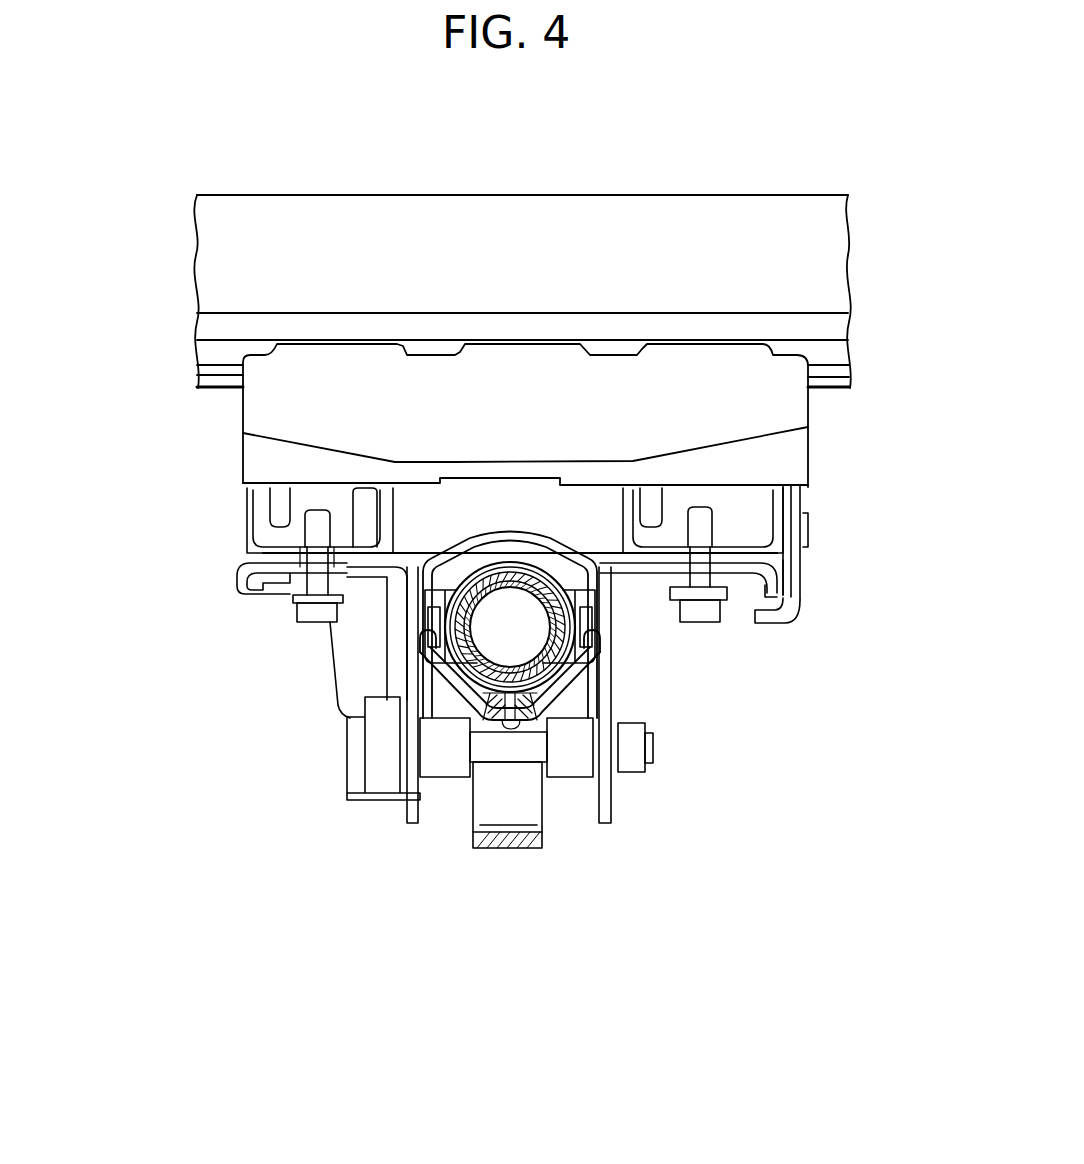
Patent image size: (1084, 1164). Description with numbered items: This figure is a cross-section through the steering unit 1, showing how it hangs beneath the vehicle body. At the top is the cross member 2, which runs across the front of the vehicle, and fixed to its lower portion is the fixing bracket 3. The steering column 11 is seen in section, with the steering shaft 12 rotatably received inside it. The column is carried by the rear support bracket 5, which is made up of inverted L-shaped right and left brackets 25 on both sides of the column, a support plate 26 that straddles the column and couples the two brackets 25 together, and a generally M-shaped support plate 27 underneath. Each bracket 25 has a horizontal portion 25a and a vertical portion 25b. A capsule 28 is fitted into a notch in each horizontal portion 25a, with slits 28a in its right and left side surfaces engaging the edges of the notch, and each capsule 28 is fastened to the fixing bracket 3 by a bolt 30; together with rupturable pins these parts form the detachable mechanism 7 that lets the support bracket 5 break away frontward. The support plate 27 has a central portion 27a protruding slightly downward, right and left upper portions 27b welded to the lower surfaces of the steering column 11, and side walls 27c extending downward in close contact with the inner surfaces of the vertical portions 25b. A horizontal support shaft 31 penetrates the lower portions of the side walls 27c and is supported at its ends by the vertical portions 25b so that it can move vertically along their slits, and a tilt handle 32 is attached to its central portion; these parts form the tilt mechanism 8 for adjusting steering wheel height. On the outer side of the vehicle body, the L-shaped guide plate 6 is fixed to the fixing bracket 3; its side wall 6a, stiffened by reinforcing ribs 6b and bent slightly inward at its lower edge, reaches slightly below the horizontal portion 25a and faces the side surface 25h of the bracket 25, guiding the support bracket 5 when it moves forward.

The steering unit 1 is at (500, 577).
The cross member 2 is at (244, 192).
The fixing bracket 3 is at (238, 503).
The rear support bracket 5 is at (376, 682).
The guide plate 6 is at (832, 532).
The side wall 6a is at (800, 572).
The reinforcing ribs 6b is at (808, 530).
The detachable mechanism 7 is at (183, 582).
The tilt mechanism 8 is at (514, 837).
The steering column 11 is at (480, 568).
The steering shaft 12 is at (501, 572).
The support plate 26 is at (516, 574).
The right and left brackets 25 is at (519, 613).
The horizontal portion 25a is at (383, 572).
The vertical portion 25b is at (377, 667).
The side surface 25h is at (800, 596).
The support plate 27 is at (551, 724).
The central portion 27a is at (527, 720).
The upper portions 27b is at (357, 740).
The side walls 27c is at (416, 802).
The capsule 28 is at (524, 505).
The slits 28a is at (257, 606).
The bolt 30 is at (307, 623).
The support shaft 31 is at (522, 755).
The tilt handle 32 is at (527, 852).